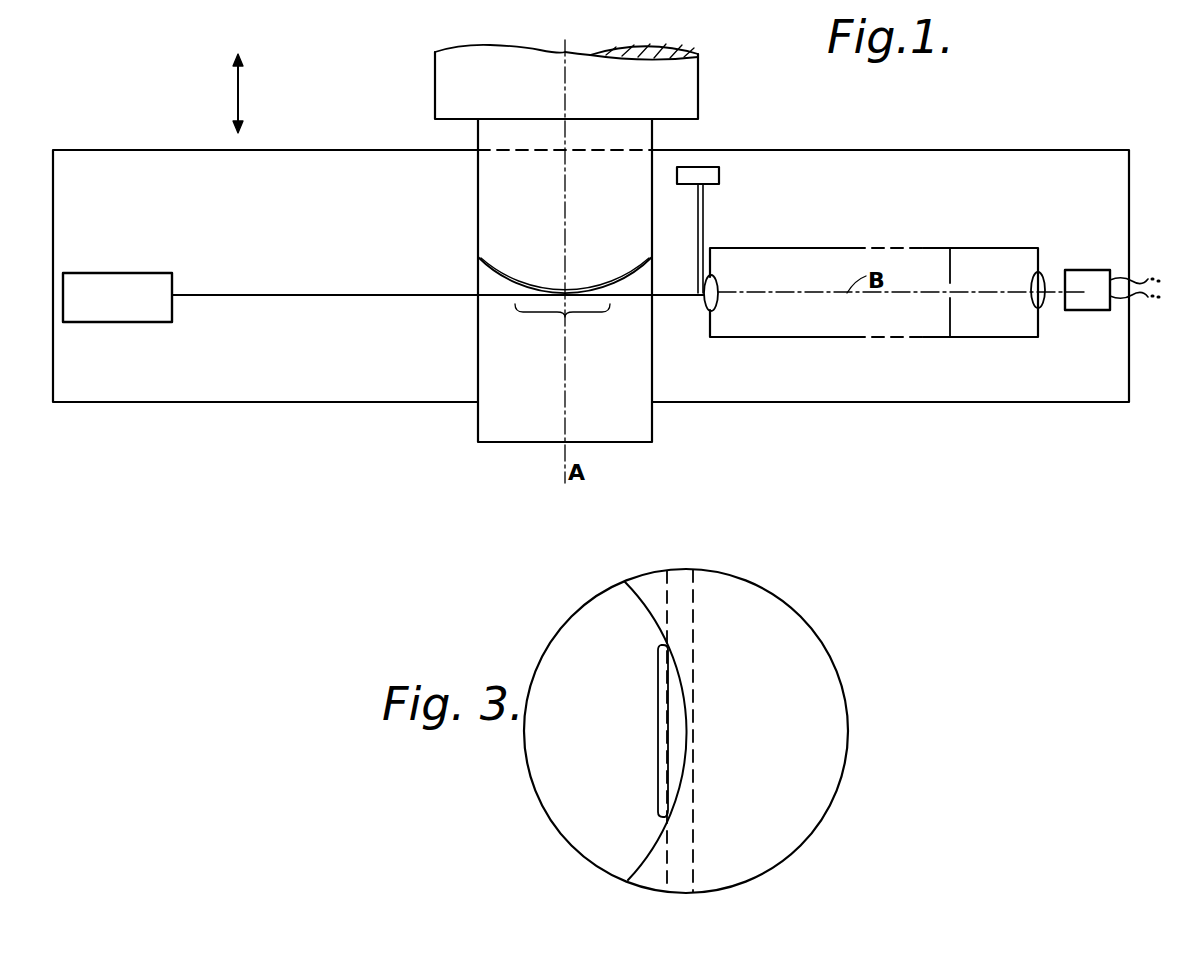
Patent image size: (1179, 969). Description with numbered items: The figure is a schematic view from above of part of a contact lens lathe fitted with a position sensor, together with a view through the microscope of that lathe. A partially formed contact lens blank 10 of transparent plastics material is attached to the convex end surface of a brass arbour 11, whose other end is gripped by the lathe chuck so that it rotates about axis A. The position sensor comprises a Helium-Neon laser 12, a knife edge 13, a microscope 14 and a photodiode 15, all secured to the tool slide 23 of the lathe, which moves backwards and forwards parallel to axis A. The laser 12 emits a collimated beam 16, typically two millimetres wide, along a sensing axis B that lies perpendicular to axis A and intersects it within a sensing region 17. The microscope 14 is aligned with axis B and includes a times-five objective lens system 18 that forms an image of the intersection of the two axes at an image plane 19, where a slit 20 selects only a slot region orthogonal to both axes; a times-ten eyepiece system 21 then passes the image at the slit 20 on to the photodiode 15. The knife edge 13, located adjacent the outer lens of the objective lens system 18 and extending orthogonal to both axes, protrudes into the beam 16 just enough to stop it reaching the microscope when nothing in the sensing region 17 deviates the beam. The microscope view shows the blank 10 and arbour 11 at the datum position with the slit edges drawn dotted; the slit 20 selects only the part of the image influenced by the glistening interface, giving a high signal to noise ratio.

In FIG. 1, the contact lens blank 10 is at (492, 429).
In FIG. 1, the brass arbour 11 is at (481, 216).
In FIG. 1, the Helium-Neon laser 12 is at (172, 273).
In FIG. 1, the knife edge 13 is at (703, 212).
In FIG. 1, the microscope 14 is at (817, 344).
In FIG. 1, the photodiode 15 is at (1094, 270).
In FIG. 1, the collimated beam 16 is at (287, 295).
In FIG. 1, the sensing region 17 is at (565, 317).
In FIG. 1, the objective lens system 18 is at (707, 310).
In FIG. 1, the image plane 19 is at (957, 249).
In FIG. 1, the slit 20 is at (950, 288).
In FIG. 3, the slit 20 is at (658, 724).
In FIG. 1, the eyepiece system 21 is at (1041, 270).
In FIG. 1, the tool slide 23 is at (950, 403).